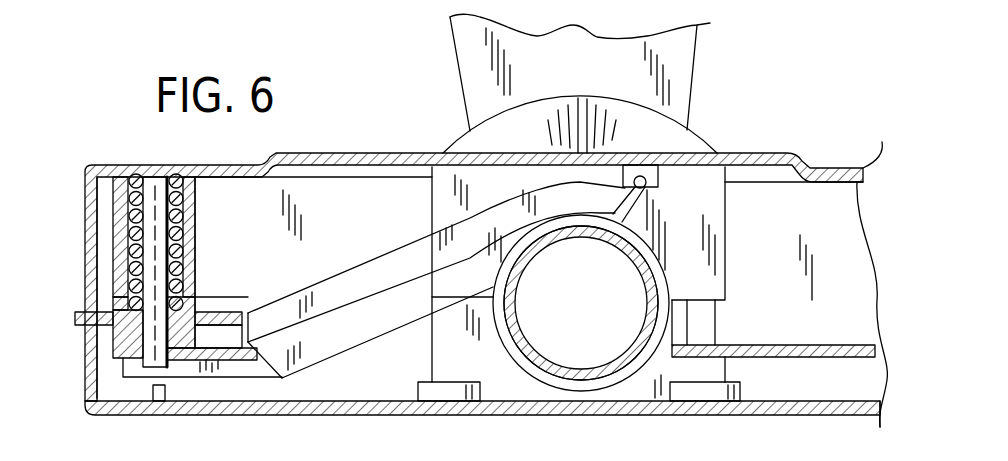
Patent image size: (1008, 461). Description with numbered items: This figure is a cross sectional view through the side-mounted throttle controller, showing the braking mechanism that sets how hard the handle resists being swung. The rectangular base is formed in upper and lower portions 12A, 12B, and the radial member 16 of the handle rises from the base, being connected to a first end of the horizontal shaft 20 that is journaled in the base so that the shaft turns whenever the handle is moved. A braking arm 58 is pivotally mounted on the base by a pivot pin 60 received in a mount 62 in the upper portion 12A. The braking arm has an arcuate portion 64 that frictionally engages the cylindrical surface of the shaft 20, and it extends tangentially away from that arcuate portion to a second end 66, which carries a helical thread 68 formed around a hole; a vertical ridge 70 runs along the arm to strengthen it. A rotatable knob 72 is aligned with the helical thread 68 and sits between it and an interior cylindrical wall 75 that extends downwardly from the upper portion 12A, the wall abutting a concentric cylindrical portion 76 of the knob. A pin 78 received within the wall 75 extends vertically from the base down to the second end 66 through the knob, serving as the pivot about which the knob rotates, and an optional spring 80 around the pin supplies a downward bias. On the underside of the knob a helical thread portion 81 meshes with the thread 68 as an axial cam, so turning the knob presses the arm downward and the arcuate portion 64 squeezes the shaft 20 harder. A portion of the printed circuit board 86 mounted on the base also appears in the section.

The upper portion of the base 12A is at (83, 227).
The lower portion of the base 12B is at (83, 375).
The radial member 16 is at (718, 52).
The horizontal shaft 20 is at (518, 372).
The braking arm 58 is at (370, 323).
The pivot pin 60 is at (650, 188).
The mount 62 is at (658, 178).
The arcuate portion 64 is at (583, 230).
The second end 66 is at (212, 373).
The helical thread 68 is at (118, 346).
The vertical ridge 70 is at (355, 283).
The rotatable knob 72 is at (75, 318).
The interior cylindrical wall 75 is at (198, 222).
The concentric cylindrical portion 76 is at (195, 303).
The pin 78 is at (150, 357).
The spring 80 is at (180, 253).
The helical thread portion 81 is at (115, 334).
The printed circuit board 86 is at (811, 345).